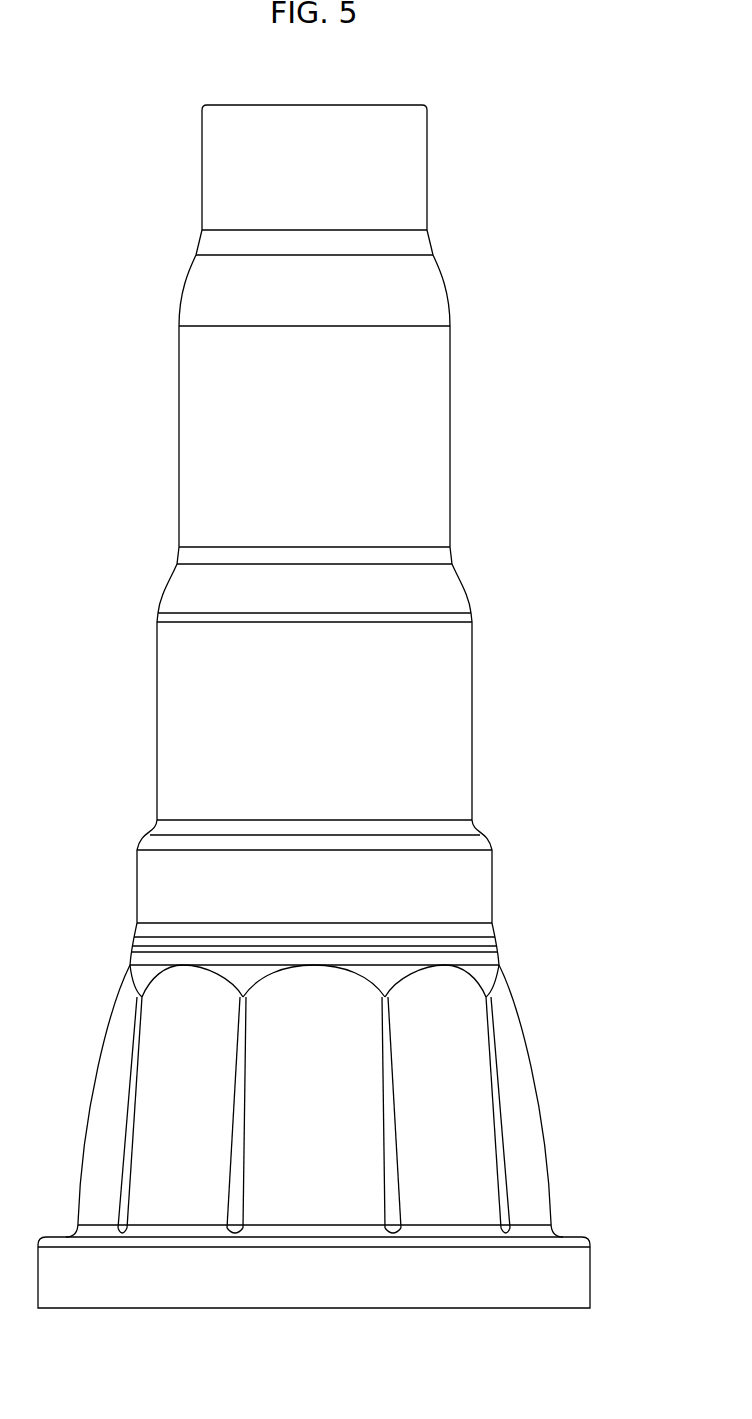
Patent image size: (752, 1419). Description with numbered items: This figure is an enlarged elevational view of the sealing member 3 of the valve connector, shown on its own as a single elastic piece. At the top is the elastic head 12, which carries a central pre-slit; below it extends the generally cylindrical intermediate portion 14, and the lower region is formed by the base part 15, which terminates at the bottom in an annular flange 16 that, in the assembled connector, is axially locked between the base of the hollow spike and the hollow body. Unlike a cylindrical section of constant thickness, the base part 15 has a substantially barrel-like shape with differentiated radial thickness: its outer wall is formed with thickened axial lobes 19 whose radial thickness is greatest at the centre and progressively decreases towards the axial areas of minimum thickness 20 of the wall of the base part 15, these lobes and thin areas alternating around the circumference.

The sealing member 3 is at (513, 276).
The elastic head 12 is at (398, 104).
The cylindrical intermediate portion 14 is at (190, 412).
The base part 15 is at (555, 1037).
The annular flange 16 is at (395, 1288).
The thickened axial lobes 19 is at (262, 1210).
The axial areas of minimum thickness 20 is at (237, 1095).